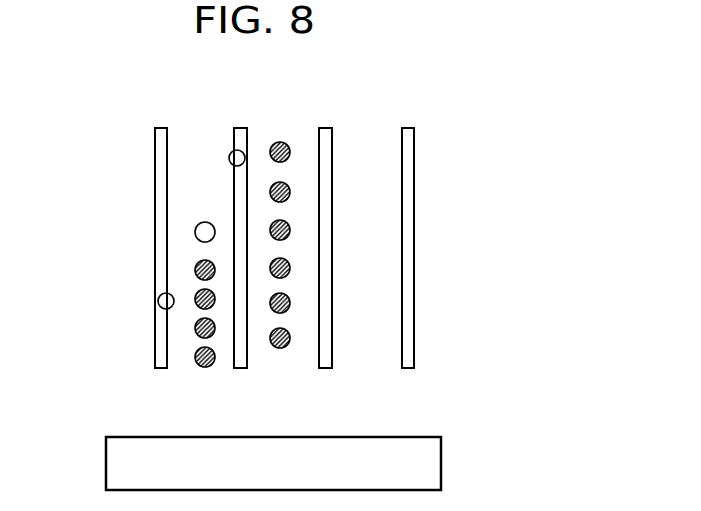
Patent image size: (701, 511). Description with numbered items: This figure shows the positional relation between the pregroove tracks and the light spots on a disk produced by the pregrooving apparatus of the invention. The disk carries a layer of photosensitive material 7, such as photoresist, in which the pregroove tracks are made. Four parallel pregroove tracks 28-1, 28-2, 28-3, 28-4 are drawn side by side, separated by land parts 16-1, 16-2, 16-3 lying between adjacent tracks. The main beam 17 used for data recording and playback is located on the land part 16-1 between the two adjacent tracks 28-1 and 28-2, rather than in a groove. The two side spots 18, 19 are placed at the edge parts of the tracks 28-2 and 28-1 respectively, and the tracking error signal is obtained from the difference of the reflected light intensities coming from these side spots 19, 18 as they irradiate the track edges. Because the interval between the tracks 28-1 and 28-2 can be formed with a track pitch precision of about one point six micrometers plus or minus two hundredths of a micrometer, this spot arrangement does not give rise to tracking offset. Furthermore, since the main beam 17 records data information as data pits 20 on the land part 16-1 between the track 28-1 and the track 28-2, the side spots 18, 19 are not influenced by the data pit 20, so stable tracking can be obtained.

The layer of photosensitive material 7 is at (106, 465).
The land part 16-1 is at (206, 369).
The land part 16-2 is at (300, 350).
The land part 16-3 is at (368, 351).
The main beam 17 is at (204, 222).
The side spot 18 is at (229, 158).
The side spot 19 is at (158, 301).
The data pit 20 is at (283, 350).
The track 28-1 is at (161, 128).
The track 28-2 is at (240, 128).
The track 28-3 is at (325, 128).
The track 28-4 is at (408, 128).